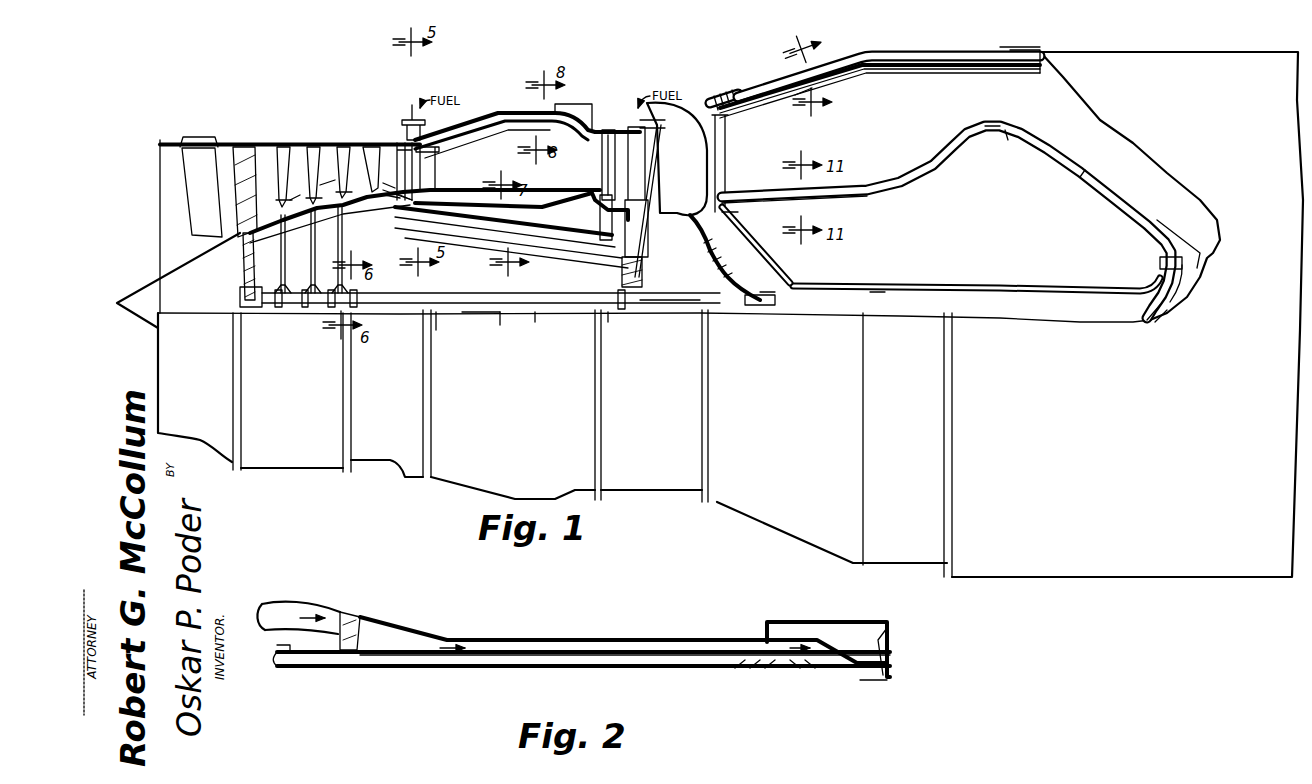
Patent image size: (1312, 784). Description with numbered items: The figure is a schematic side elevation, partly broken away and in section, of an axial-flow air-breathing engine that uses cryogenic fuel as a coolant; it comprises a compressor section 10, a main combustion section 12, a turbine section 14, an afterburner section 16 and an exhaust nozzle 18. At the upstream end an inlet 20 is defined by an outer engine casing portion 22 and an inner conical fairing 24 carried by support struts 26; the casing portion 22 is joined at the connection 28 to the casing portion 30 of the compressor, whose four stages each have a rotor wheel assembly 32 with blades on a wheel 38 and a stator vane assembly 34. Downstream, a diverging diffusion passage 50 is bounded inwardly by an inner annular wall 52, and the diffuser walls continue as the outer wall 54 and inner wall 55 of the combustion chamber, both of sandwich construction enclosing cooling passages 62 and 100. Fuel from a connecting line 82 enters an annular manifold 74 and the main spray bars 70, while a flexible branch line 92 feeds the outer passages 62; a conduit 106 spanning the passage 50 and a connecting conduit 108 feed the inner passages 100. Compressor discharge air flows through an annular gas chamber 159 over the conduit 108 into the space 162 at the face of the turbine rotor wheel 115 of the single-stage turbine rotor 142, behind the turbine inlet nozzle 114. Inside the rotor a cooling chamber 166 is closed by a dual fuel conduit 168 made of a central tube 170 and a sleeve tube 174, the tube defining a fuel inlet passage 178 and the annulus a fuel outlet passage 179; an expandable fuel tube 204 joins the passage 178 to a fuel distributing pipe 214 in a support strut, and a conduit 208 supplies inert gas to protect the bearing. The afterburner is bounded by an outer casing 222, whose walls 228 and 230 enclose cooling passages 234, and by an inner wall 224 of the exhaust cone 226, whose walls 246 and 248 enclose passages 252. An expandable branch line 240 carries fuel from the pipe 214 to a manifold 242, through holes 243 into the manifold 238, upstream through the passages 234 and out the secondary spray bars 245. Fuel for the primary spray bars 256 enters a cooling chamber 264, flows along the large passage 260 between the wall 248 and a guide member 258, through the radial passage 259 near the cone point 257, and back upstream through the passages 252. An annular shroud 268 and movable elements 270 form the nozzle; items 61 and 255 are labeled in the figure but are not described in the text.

In FIG. 1, the compressor section 10 is at (265, 458).
In FIG. 1, the main combustion section 12 is at (445, 460).
In FIG. 1, the turbine section 14 is at (627, 463).
In FIG. 1, the afterburner section 16 is at (733, 473).
In FIG. 1, the exhaust nozzle 18 is at (1022, 565).
In FIG. 2, the exhaust nozzle 18 is at (782, 617).
In FIG. 1, the inlet 20 is at (158, 212).
In FIG. 1, the outer annular engine casing portion 22 is at (203, 142).
In FIG. 1, the inner annular conical fairing 24 is at (228, 258).
In FIG. 1, the support struts 26 is at (192, 222).
In FIG. 1, the casing connection 28 is at (247, 145).
In FIG. 1, the engine casing portion 30 is at (284, 146).
In FIG. 1, the rotor wheel assembly 32 is at (343, 146).
In FIG. 1, the stator vane assembly 34 is at (314, 146).
In FIG. 1, the rotor wheel 38 is at (245, 290).
In FIG. 1, the diverging air diffusion passage 50 is at (368, 146).
In FIG. 1, the inner annular wall 52 is at (398, 188).
In FIG. 1, the outer combustion chamber wall 54 is at (503, 118).
In FIG. 1, the inner combustion chamber wall 55 is at (487, 198).
In FIG. 1, the diffuser strut 61 is at (398, 146).
In FIG. 1, the cooling passages 62 is at (513, 134).
In FIG. 1, the main fuel spray bars 70 is at (437, 185).
In FIG. 1, the annular fuel manifold 74 is at (435, 135).
In FIG. 1, the connecting line 82 is at (420, 105).
In FIG. 1, the flexible branch line 92 is at (572, 110).
In FIG. 1, the cooling passages 100 is at (600, 165).
In FIG. 1, the conduit 106 is at (410, 212).
In FIG. 1, the connecting conduit 108 is at (505, 233).
In FIG. 1, the turbine inlet nozzle 114 is at (600, 160).
In FIG. 1, the turbine rotor wheel 115 is at (618, 268).
In FIG. 1, the turbine rotor 142 is at (632, 125).
In FIG. 1, the annular gas chamber 159 is at (540, 248).
In FIG. 1, the space 162 is at (650, 212).
In FIG. 1, the annular cooling chamber 166 is at (492, 318).
In FIG. 1, the dual fuel conduit 168 is at (504, 325).
In FIG. 1, the central tube 170 is at (438, 322).
In FIG. 1, the sleeve tube 174 is at (492, 262).
In FIG. 1, the fuel inlet passage 178 is at (540, 318).
In FIG. 1, the fuel outlet passage 179 is at (610, 318).
In FIG. 1, the expandable fuel tube 204 is at (758, 308).
In FIG. 1, the inert gas conduit 208 is at (705, 295).
In FIG. 1, the fuel distributing pipe 214 is at (722, 95).
In FIG. 1, the outer annular engine casing 222 is at (797, 105).
In FIG. 1, the inner annular wall 224 is at (779, 190).
In FIG. 1, the inner exhaust cone 226 is at (1078, 180).
In FIG. 1, the outer casing wall 228 is at (790, 95).
In FIG. 2, the outer casing wall 228 is at (318, 650).
In FIG. 1, the liner wall 230 is at (907, 75).
In FIG. 2, the liner wall 230 is at (335, 658).
In FIG. 1, the cooling passages 234 is at (876, 60).
In FIG. 2, the cooling passages 234 is at (490, 655).
In FIG. 2, the annular manifold 238 is at (710, 662).
In FIG. 1, the expandable branch line 240 is at (745, 90).
In FIG. 2, the expandable branch line 240 is at (272, 605).
In FIG. 2, the annular manifold 242 is at (650, 658).
In FIG. 2, the communicating holes 243 is at (808, 668).
In FIG. 1, the secondary afterburner spray bars 245 is at (732, 128).
In FIG. 1, the outer cone wall 246 is at (990, 120).
In FIG. 1, the inner cone wall 248 is at (1000, 150).
In FIG. 1, the cooling passages 252 is at (1040, 125).
In FIG. 1, the support flange 255 is at (755, 215).
In FIG. 1, the primary afterburner spray bars 256 is at (692, 182).
In FIG. 1, the cone point 257 is at (1170, 222).
In FIG. 1, the annular guide member 258 is at (1165, 318).
In FIG. 1, the radial cooling passage 259 is at (1180, 278).
In FIG. 1, the large fuel passage 260 is at (1000, 295).
In FIG. 1, the fuel cooling chamber 264 is at (790, 275).
In FIG. 1, the annular shroud 268 is at (1078, 58).
In FIG. 2, the annular shroud 268 is at (885, 635).
In FIG. 1, the movable elements 270 is at (1052, 58).